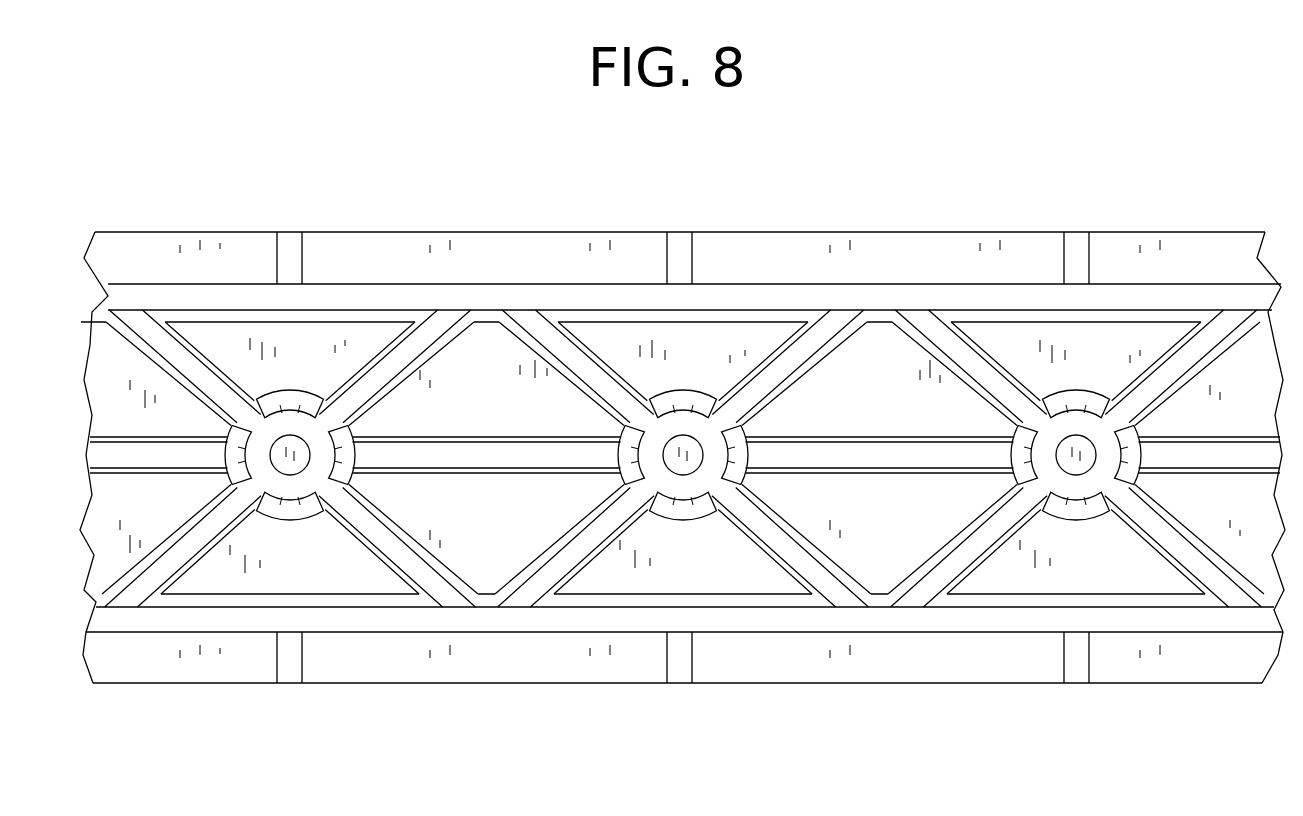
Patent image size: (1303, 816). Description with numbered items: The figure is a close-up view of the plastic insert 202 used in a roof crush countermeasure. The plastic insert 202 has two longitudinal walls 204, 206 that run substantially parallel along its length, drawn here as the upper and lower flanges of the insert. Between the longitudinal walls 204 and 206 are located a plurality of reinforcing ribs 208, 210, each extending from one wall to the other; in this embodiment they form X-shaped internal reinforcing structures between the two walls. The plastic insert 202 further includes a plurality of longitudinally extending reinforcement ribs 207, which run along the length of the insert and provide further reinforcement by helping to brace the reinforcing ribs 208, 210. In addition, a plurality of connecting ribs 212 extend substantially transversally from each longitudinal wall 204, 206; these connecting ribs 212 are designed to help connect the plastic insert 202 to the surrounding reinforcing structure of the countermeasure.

The plastic insert 202 is at (1002, 630).
The longitudinal wall 204 is at (372, 612).
The longitudinal wall 206 is at (348, 296).
The longitudinally extending reinforcement rib 207 is at (815, 452).
The reinforcing rib 208 is at (932, 575).
The reinforcing rib 210 is at (975, 365).
The connecting rib 212 is at (1070, 660).